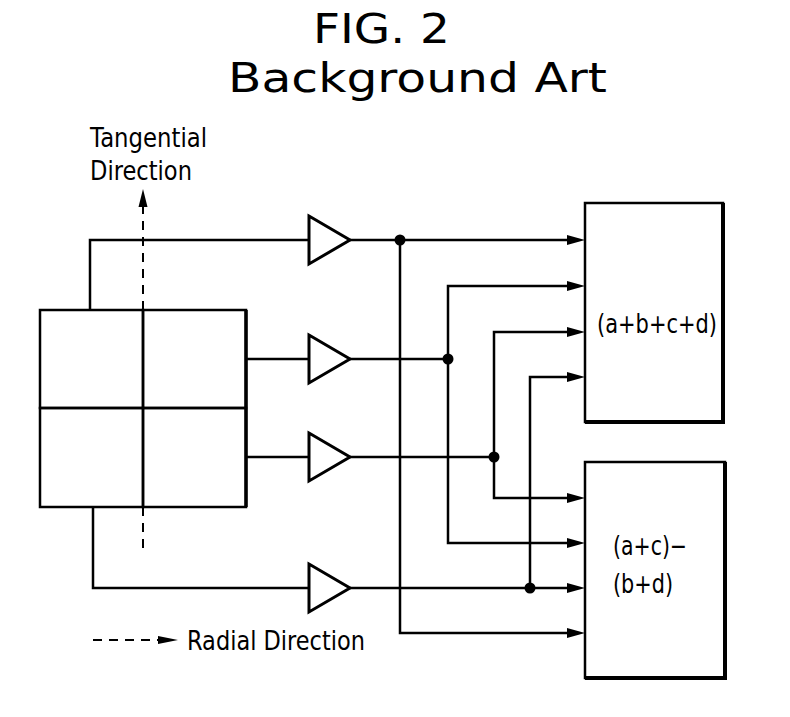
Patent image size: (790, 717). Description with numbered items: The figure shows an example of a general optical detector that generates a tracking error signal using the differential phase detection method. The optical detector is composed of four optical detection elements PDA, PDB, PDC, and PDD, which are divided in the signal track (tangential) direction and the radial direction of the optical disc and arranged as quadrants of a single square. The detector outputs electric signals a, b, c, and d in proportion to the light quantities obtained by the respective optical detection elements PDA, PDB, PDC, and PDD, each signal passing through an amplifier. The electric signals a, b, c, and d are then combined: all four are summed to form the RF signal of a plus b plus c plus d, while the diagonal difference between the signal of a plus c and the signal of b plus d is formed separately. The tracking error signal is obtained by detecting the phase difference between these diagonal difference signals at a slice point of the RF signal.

The electric signal a is at (344, 236).
The electric signal b is at (344, 355).
The electric signal c is at (343, 453).
The electric signal d is at (344, 584).
The optical detection element PDA is at (91, 359).
The optical detection element PDB is at (194, 359).
The optical detection element PDC is at (194, 457).
The optical detection element PDD is at (91, 457).